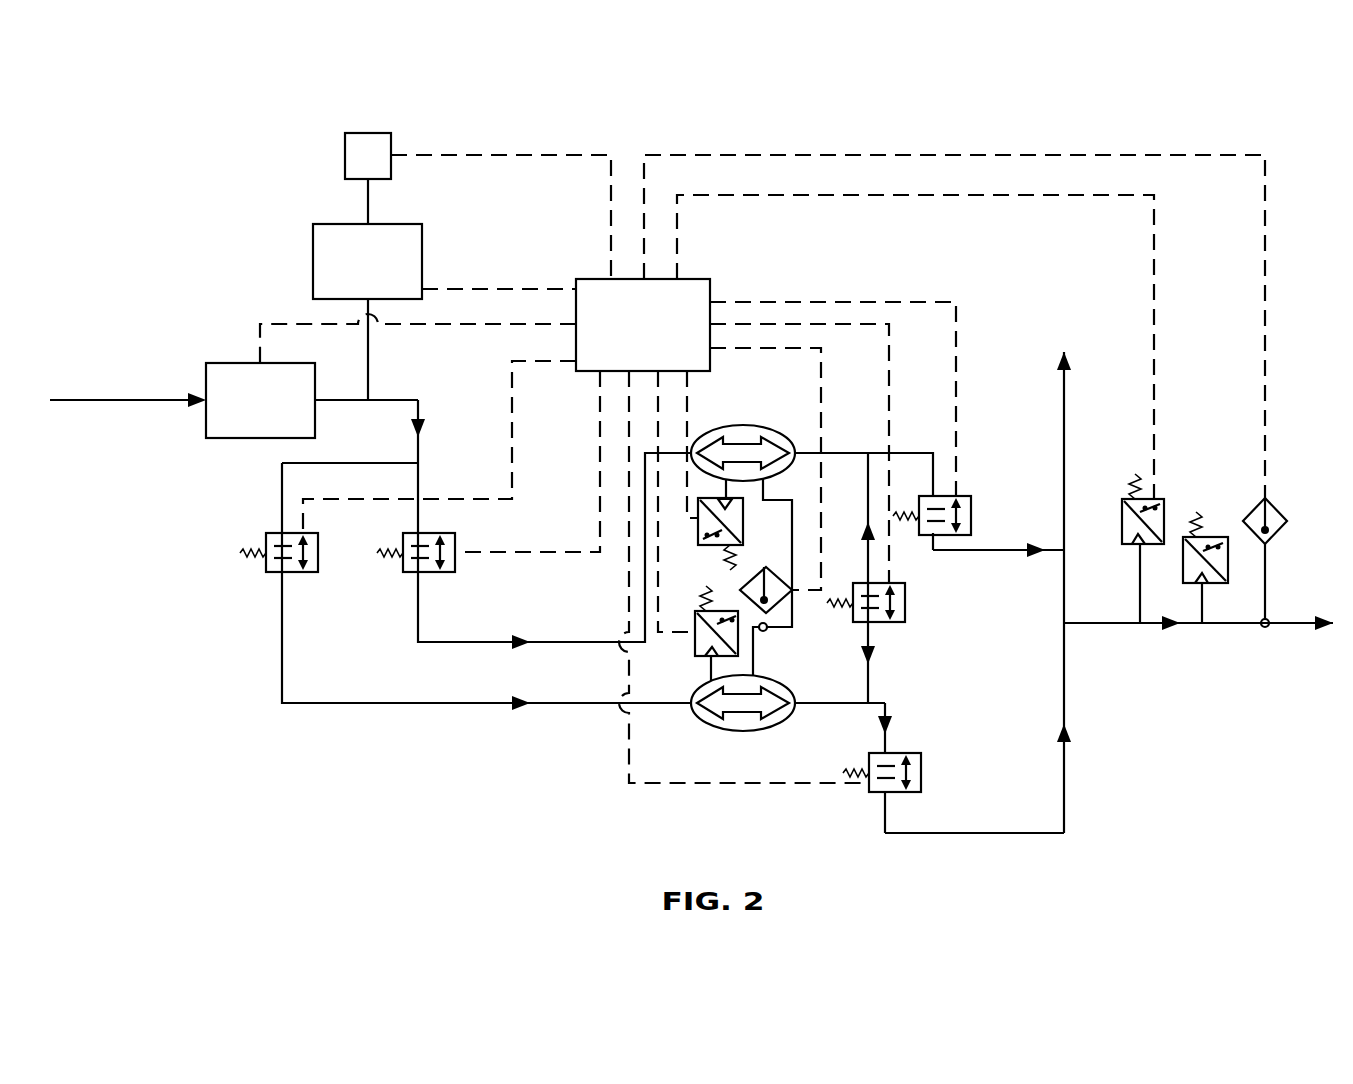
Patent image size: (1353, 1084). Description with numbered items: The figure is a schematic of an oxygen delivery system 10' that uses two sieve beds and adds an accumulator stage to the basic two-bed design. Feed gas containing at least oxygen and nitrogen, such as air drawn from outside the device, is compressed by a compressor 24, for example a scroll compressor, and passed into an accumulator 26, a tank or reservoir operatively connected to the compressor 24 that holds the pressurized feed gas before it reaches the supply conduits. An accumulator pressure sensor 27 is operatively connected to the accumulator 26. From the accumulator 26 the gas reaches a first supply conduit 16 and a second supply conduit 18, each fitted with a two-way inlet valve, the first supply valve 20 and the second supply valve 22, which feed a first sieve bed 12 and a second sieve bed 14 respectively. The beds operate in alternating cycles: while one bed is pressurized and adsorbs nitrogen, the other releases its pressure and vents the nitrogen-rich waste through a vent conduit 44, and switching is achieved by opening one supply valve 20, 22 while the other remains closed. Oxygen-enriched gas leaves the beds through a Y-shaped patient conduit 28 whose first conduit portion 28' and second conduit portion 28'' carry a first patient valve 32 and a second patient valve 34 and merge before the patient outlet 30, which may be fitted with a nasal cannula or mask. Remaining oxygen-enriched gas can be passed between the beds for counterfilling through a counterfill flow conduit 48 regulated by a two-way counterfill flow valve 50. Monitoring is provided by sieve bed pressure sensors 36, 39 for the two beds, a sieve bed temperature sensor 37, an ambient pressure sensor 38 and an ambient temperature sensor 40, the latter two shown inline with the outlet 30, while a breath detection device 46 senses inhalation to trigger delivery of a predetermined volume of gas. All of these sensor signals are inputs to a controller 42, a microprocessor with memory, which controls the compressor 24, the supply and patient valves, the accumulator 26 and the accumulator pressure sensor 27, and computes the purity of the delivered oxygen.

The oxygen delivery system 10' is at (190, 179).
The first sieve bed 12 is at (744, 425).
The second sieve bed 14 is at (743, 731).
The first supply conduit 16 is at (420, 599).
The second supply conduit 18 is at (282, 645).
The first supply valve 20 is at (403, 562).
The second supply valve 22 is at (266, 562).
The compressor 24 is at (260, 400).
The accumulator 26 is at (367, 261).
The accumulator pressure sensor 27 is at (368, 156).
The patient conduit 28 is at (1198, 672).
The first conduit portion 28' is at (907, 431).
The second conduit portion 28'' is at (919, 703).
The patient outlet 30 is at (1290, 628).
The first patient valve 32 is at (975, 513).
The second patient valve 34 is at (922, 773).
The sieve bed pressure sensor 36 is at (698, 525).
The sieve bed temperature sensor 37 is at (775, 577).
The ambient pressure sensor 38 is at (1120, 520).
The sieve bed pressure sensor 39 is at (692, 643).
The ambient temperature sensor 40 is at (1272, 497).
The controller 42 is at (762, 469).
The vent conduit 44 is at (1064, 450).
The breath detection device 46 is at (1227, 537).
The counterfill flow conduit 48 is at (856, 468).
The counterfill flow valve 50 is at (905, 600).